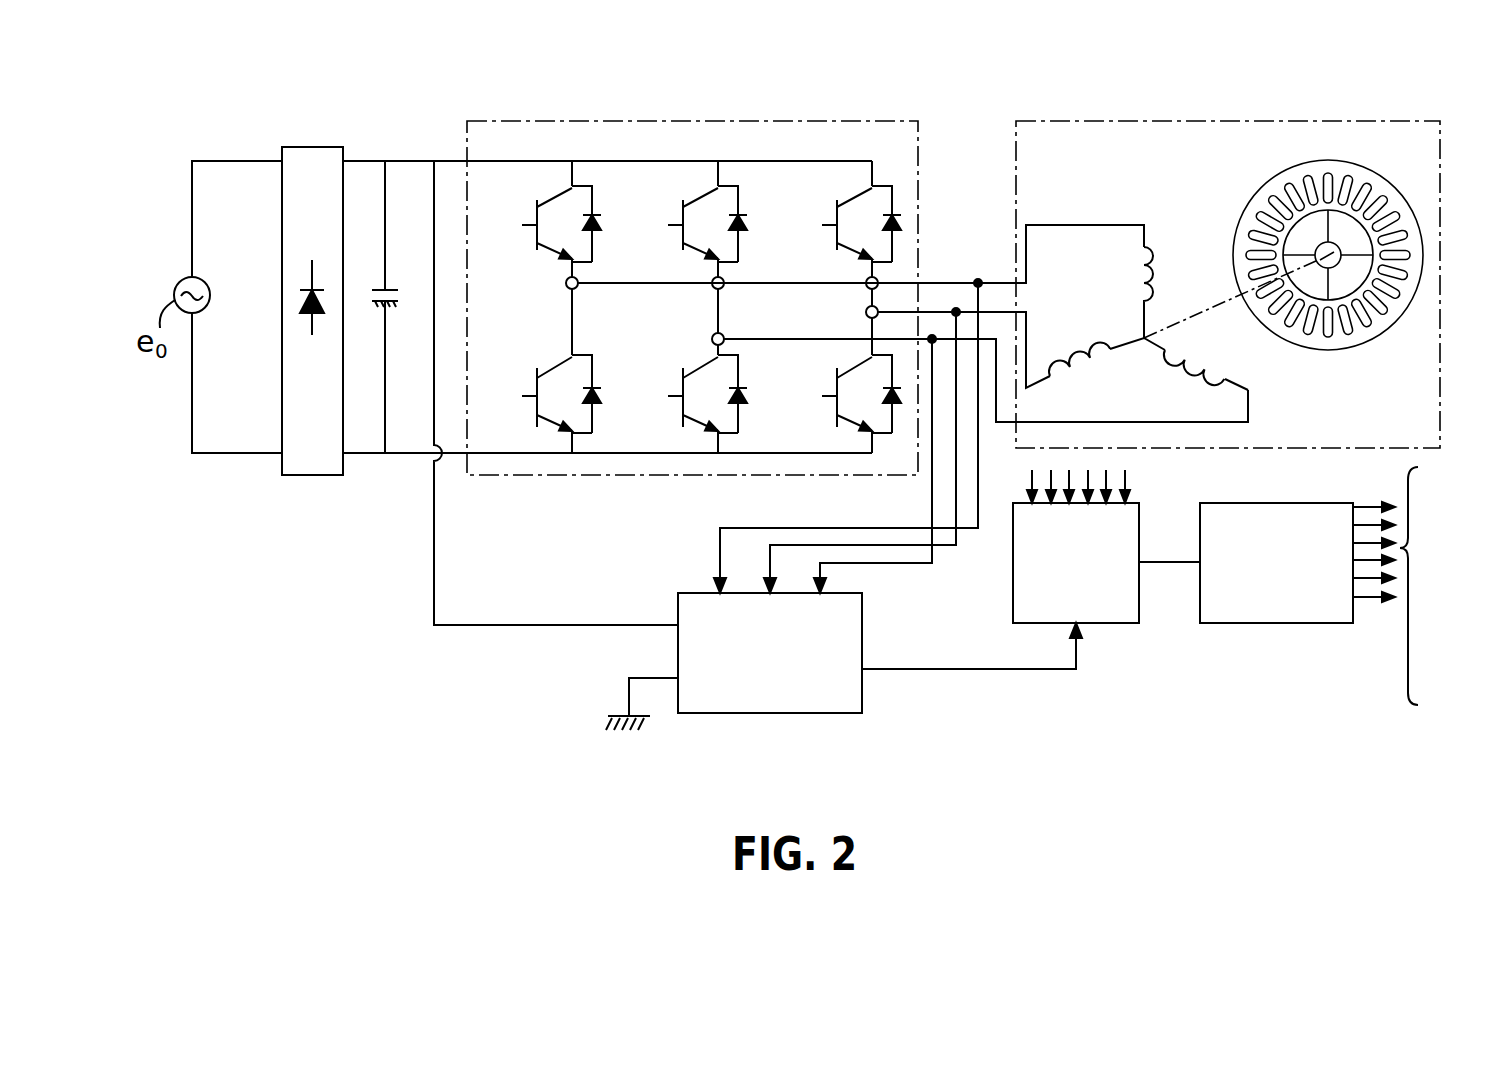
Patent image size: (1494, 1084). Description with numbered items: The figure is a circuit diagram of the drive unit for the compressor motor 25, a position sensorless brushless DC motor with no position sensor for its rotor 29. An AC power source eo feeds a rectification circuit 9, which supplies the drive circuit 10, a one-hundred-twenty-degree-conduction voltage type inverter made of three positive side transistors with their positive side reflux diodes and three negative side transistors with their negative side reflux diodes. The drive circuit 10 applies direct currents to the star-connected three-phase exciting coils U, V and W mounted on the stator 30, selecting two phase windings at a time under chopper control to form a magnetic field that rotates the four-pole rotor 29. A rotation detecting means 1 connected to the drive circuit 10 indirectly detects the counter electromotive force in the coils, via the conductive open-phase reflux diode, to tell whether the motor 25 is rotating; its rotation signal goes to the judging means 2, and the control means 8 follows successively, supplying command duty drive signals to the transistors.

The rotation detecting means 1 is at (760, 713).
The judging means 2 is at (1113, 623).
The control means 8 is at (1288, 623).
The rectification circuit 9 is at (311, 147).
The drive circuit 10 is at (690, 121).
The motor 25 is at (1228, 251).
The rotor 29 is at (1363, 285).
The stator 30 is at (1380, 185).